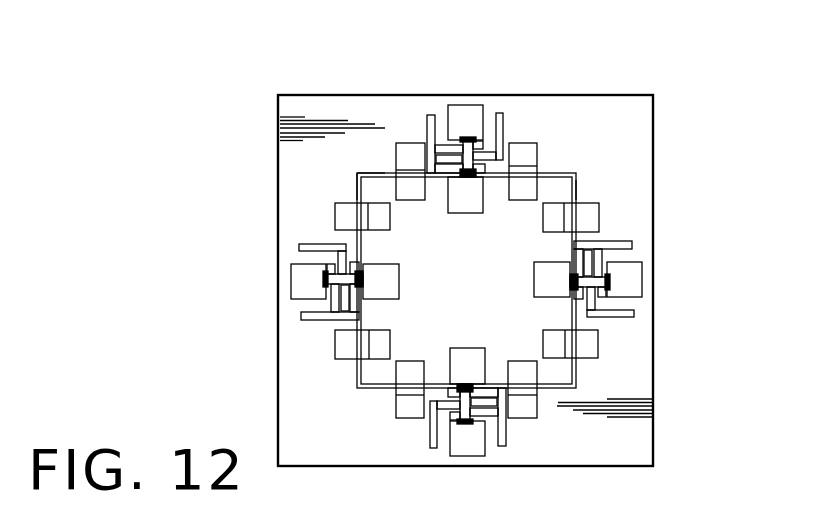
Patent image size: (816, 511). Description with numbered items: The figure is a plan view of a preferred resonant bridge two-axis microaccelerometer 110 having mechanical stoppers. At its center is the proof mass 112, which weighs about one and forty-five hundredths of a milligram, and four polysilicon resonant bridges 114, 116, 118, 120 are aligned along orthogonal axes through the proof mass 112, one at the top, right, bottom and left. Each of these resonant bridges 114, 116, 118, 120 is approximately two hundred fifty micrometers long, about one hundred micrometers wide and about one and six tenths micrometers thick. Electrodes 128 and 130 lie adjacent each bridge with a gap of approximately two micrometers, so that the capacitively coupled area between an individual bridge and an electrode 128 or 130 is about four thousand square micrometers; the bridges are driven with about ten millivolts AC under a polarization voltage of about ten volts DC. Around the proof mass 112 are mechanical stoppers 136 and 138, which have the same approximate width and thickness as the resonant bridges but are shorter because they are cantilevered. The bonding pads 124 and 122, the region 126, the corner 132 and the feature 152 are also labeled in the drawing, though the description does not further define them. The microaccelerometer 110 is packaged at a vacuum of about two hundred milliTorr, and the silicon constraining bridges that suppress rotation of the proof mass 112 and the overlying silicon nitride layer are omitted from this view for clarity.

The resonant microaccelerometer 110 is at (581, 78).
The proof mass 112 is at (577, 195).
The resonant bridge 114 is at (580, 277).
The resonant bridge 116 is at (328, 278).
The resonant bridge 118 is at (460, 410).
The resonant bridge 120 is at (467, 147).
The inner bonding pad 122 is at (463, 214).
The outer bonding pad 124 is at (464, 110).
The substrate surface 126 is at (641, 346).
The electrode 128 is at (456, 158).
The electrode 130 is at (483, 146).
The loop corner 132 is at (358, 176).
The mechanical stopper 136 is at (412, 150).
The mechanical stopper 138 is at (557, 206).
The loop gap 152 is at (576, 197).